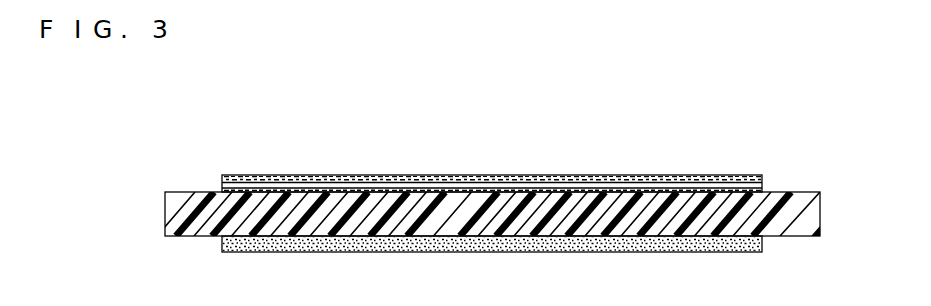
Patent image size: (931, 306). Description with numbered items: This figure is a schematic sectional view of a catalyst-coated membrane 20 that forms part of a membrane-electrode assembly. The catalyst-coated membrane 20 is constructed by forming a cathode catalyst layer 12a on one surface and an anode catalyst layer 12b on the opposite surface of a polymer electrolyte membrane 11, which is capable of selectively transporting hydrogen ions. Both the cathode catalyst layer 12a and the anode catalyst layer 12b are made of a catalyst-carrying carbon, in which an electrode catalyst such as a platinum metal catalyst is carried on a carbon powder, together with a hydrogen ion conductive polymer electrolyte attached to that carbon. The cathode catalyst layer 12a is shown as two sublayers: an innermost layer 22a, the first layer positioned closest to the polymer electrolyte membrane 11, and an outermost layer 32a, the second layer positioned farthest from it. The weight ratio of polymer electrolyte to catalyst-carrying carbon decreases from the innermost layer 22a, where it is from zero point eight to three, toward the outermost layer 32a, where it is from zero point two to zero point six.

The polymer electrolyte membrane 11 is at (803, 221).
The cathode catalyst layer 12a is at (752, 176).
The anode catalyst layer 12b is at (763, 246).
The catalyst-coated membrane 20 is at (480, 142).
The innermost layer 22a is at (223, 189).
The outermost layer 32a is at (222, 177).